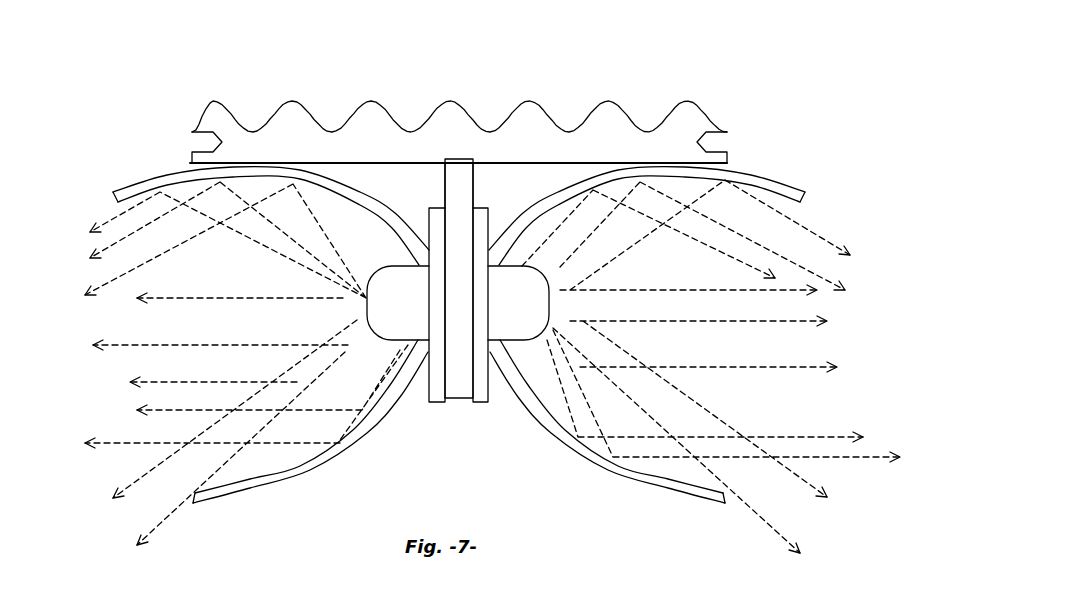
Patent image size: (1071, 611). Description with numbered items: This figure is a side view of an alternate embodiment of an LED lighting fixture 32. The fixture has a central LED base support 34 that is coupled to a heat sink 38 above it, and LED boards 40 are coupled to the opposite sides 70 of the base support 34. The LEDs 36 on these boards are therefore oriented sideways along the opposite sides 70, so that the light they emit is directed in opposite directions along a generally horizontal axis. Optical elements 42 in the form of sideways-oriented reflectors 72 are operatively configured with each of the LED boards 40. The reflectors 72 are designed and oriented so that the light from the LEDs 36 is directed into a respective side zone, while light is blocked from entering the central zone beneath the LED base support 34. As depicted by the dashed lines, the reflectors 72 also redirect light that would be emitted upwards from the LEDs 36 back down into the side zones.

The LED lighting fixture 32 is at (676, 74).
The LED base support 34 is at (457, 174).
The LEDs 36 is at (390, 298).
The heat sink 38 is at (372, 118).
The LED boards 40 is at (437, 220).
The optical elements 42 is at (328, 473).
The opposite sides 70 is at (445, 178).
The sideways-oriented reflectors 72 is at (378, 425).